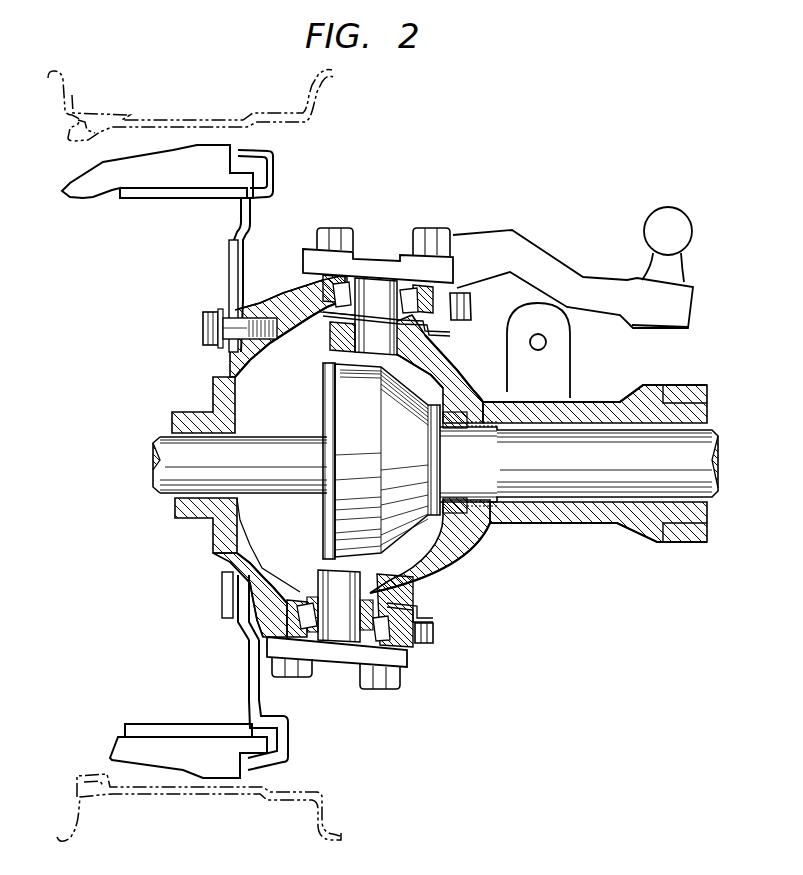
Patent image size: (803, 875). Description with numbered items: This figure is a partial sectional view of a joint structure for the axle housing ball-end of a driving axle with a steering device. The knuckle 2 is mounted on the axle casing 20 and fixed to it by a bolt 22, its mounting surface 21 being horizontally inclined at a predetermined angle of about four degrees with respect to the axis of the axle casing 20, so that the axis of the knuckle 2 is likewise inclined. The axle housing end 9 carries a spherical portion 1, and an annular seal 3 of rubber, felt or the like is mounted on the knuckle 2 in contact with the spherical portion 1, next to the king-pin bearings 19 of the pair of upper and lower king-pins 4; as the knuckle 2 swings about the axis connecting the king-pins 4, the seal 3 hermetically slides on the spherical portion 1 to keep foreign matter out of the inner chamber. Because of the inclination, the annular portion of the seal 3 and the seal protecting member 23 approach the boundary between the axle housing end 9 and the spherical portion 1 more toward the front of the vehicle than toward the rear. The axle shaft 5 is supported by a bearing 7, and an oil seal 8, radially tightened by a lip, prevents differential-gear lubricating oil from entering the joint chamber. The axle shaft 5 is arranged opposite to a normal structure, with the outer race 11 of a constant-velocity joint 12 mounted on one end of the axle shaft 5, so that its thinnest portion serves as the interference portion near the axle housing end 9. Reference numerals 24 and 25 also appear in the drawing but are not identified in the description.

The spherical portion 1 is at (443, 563).
The knuckle 2 is at (293, 298).
The seal 3 is at (471, 306).
The king-pins 4 is at (380, 290).
The axle shaft 5 is at (590, 448).
The bearing 7 is at (490, 410).
The oil seal 8 is at (467, 530).
The axle housing end 9 is at (561, 513).
The outer race 11 is at (345, 515).
The constant-velocity joint 12 is at (318, 410).
The king-pin bearings 19 is at (425, 290).
The axle casing 20 is at (196, 505).
The mounting surface 21 is at (230, 356).
The bolt 22 is at (228, 316).
The seal protecting member 23 is at (447, 327).
The wheel rim 24 is at (204, 121).
The axle shaft 25 is at (183, 460).